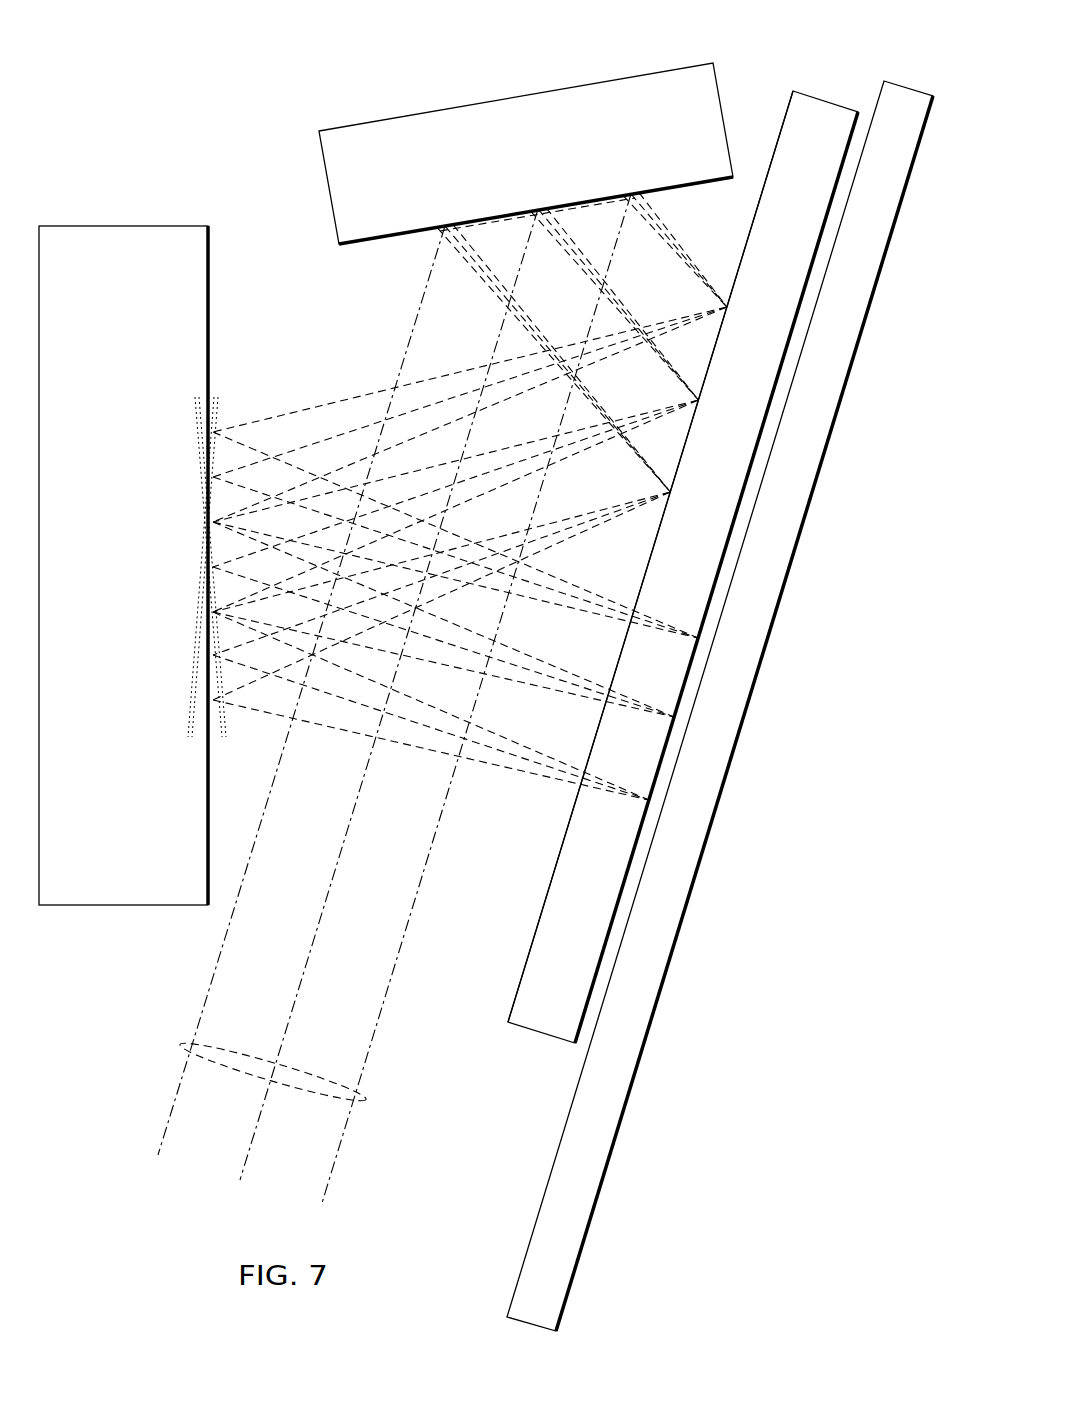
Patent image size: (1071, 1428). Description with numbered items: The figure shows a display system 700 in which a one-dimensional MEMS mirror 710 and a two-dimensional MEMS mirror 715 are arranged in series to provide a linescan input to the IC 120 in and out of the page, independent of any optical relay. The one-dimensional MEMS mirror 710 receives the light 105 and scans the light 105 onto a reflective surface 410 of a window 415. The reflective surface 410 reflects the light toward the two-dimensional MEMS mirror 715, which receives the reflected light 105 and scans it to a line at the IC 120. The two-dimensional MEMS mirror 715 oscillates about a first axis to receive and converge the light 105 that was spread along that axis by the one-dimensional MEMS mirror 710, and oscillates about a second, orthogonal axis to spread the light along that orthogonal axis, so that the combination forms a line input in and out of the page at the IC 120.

The display system 700 is at (190, 81).
The 1-D MEMS mirror 710 is at (518, 95).
The 2-D MEMS mirror 715 is at (123, 226).
The reflective surface 410 is at (748, 232).
The window 415 is at (543, 902).
The IC 120 is at (747, 710).
The light 105 is at (180, 1043).